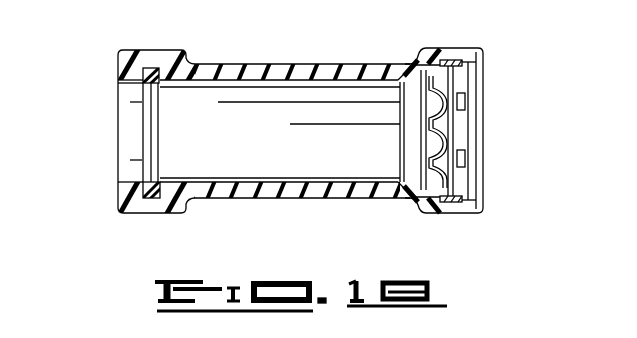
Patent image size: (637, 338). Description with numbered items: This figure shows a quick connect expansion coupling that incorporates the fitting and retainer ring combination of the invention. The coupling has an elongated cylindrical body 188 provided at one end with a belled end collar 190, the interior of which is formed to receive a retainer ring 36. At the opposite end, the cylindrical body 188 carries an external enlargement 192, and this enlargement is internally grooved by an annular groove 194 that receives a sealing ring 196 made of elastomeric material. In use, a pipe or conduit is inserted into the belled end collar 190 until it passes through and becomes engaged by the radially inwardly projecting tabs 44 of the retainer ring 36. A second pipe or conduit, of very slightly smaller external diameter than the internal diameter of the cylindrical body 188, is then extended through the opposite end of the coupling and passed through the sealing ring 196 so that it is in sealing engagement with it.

The external enlargement 192 is at (134, 53).
The elongated cylindrical body 188 is at (285, 68).
The belled end collar 190 is at (447, 48).
The retainer ring 36 is at (450, 117).
The radially inwardly projecting tabs 44 is at (430, 143).
The sealing ring 196 is at (152, 130).
The annular groove 194 is at (155, 199).